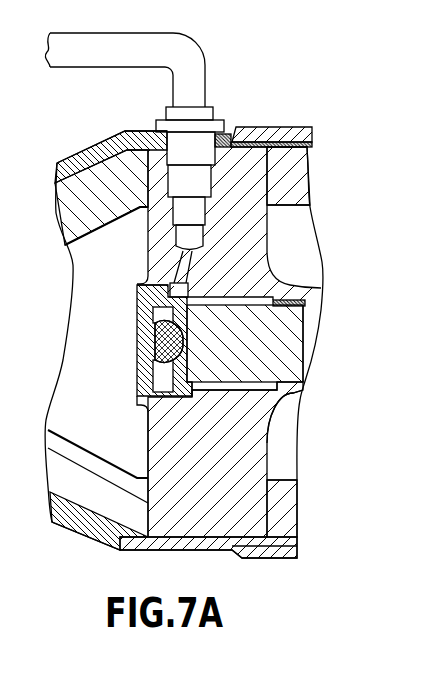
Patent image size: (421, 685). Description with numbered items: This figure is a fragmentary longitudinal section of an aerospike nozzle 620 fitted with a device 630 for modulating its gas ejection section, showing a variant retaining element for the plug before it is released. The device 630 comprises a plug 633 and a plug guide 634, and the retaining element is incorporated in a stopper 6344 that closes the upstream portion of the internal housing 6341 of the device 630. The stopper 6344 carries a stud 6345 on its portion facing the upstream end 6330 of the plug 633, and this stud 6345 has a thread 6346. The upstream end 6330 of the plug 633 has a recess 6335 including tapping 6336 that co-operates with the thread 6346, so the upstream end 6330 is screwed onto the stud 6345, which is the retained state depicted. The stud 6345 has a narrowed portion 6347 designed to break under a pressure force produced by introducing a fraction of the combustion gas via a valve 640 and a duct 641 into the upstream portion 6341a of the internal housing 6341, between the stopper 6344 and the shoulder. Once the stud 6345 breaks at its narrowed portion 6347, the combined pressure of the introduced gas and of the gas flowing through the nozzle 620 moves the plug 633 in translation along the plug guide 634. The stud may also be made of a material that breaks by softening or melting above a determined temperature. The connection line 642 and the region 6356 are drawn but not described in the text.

The connection line 642 is at (150, 57).
The nozzle 620 is at (248, 118).
The valve 640 is at (211, 161).
The duct 641 is at (178, 250).
The housing wall 6356 is at (210, 298).
The internal housing 6341 is at (276, 296).
The device for modulating the gas ejection section 630 is at (309, 281).
The stopper 6344 is at (137, 301).
The upstream portion of the internal housing 6341a is at (140, 285).
The thread 6346 is at (137, 313).
The stud 6345 is at (135, 342).
The narrowed portion 6347 is at (135, 367).
The tapping 6336 is at (137, 405).
The recess 6335 is at (197, 390).
The upstream end of the plug 6330 is at (255, 353).
The plug 633 is at (292, 340).
The plug guide 634 is at (303, 392).